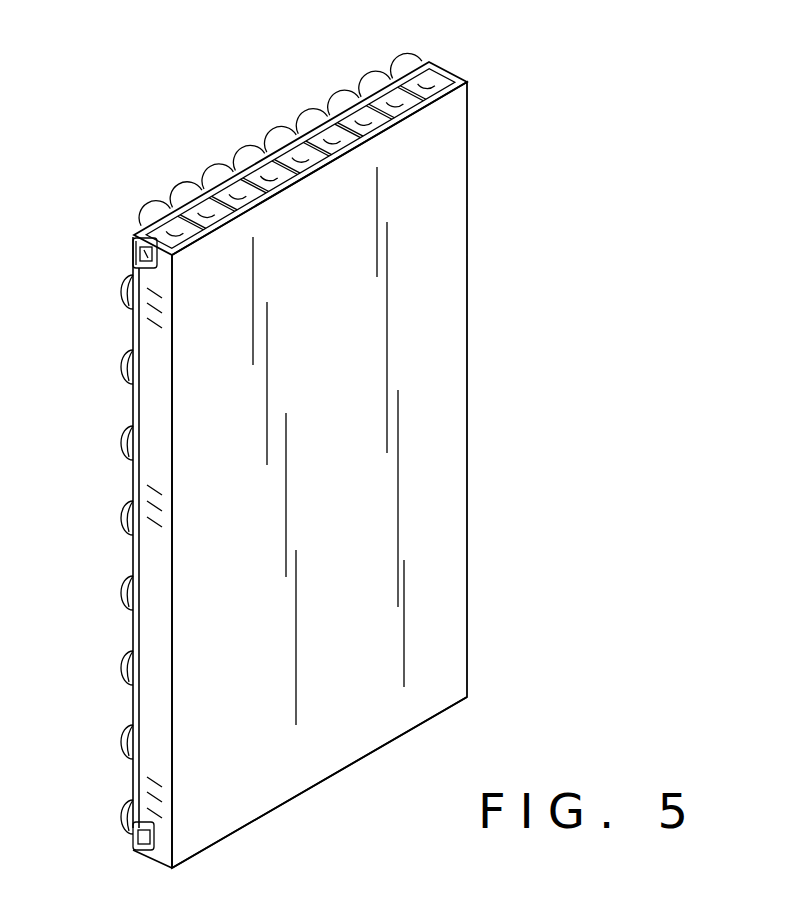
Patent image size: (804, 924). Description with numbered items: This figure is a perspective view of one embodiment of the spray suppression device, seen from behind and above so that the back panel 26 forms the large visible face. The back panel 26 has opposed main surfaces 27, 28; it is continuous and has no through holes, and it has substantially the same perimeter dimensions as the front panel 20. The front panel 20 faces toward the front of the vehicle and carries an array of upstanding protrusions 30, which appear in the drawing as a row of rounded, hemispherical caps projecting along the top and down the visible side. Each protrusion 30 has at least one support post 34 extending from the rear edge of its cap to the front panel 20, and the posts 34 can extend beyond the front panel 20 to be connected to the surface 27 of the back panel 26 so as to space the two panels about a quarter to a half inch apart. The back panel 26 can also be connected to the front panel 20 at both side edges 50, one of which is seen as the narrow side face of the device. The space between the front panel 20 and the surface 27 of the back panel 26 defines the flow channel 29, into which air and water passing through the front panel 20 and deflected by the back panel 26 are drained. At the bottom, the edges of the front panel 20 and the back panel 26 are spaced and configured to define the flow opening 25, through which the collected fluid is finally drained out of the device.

The front panel 20 is at (421, 70).
The flow opening at bottom edge 25 is at (256, 820).
The back panel 26 is at (136, 272).
The main surface of back panel 27 is at (162, 220).
The opposed main surface of back panel 28 is at (205, 288).
The flow channel 29 is at (268, 140).
The protrusion 30 is at (303, 120).
The support post 34 is at (228, 172).
The side edge 50 is at (160, 565).